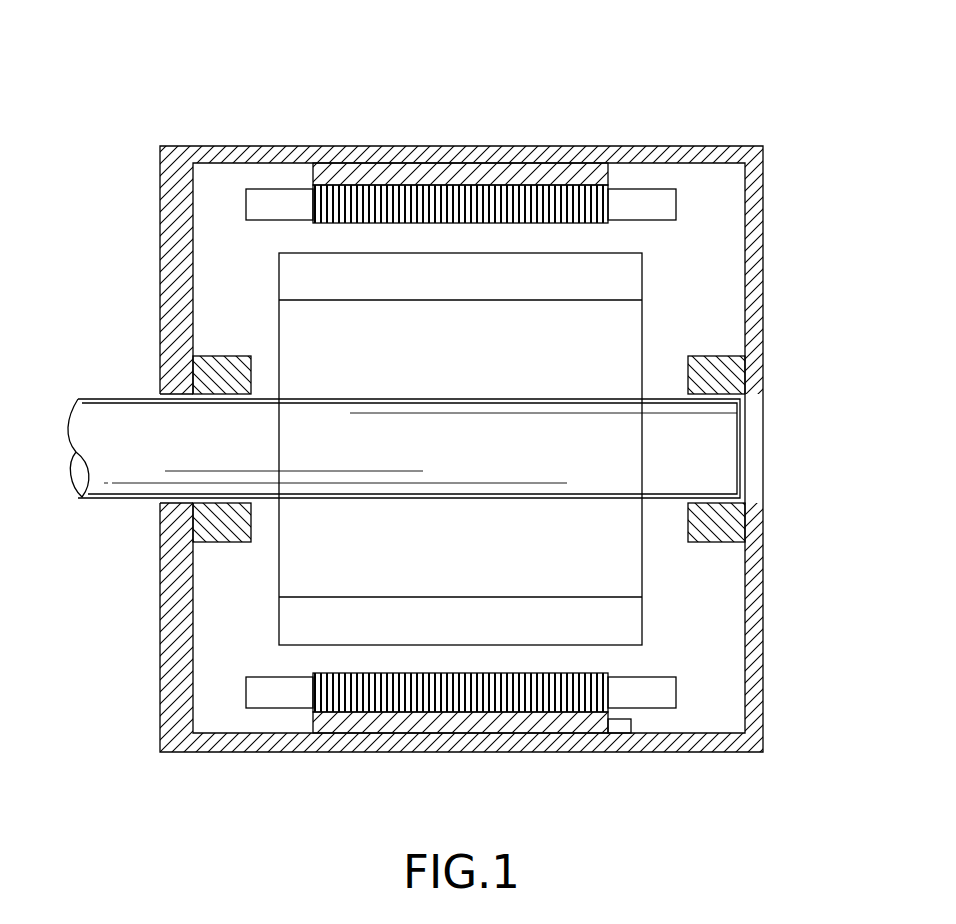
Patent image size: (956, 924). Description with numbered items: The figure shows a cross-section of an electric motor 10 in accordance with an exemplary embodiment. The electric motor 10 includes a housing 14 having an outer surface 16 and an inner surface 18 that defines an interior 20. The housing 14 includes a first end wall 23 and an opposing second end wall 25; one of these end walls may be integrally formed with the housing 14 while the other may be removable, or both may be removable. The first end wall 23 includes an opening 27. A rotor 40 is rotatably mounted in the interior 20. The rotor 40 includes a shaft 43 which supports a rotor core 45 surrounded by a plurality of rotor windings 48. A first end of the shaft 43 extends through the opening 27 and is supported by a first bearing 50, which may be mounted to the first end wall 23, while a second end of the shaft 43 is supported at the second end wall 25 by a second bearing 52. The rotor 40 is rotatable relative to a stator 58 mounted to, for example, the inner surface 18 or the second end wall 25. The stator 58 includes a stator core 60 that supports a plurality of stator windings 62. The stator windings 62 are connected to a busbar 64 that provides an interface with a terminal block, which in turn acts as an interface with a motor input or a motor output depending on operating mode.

The electric motor 10 is at (132, 92).
The housing 14 is at (140, 195).
The outer surface 16 is at (318, 147).
The inner surface 18 is at (686, 163).
The interior 20 is at (225, 287).
The first end wall 23 is at (170, 589).
The second end wall 25 is at (752, 613).
The opening 27 is at (178, 503).
The rotor 40 is at (680, 338).
The shaft 43 is at (373, 459).
The rotor core 45 is at (485, 373).
The rotor windings 48 is at (385, 283).
The first bearing 50 is at (213, 533).
The second bearing 52 is at (718, 535).
The stator 58 is at (706, 689).
The stator core 60 is at (467, 170).
The stator windings 62 is at (632, 200).
The busbar 64 is at (618, 726).